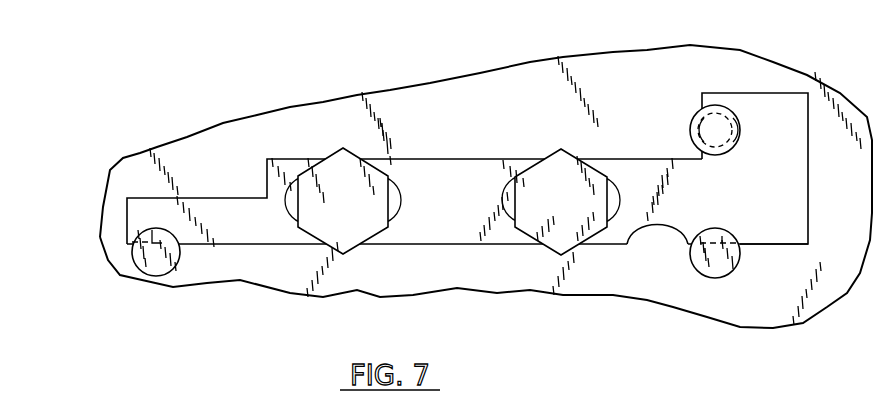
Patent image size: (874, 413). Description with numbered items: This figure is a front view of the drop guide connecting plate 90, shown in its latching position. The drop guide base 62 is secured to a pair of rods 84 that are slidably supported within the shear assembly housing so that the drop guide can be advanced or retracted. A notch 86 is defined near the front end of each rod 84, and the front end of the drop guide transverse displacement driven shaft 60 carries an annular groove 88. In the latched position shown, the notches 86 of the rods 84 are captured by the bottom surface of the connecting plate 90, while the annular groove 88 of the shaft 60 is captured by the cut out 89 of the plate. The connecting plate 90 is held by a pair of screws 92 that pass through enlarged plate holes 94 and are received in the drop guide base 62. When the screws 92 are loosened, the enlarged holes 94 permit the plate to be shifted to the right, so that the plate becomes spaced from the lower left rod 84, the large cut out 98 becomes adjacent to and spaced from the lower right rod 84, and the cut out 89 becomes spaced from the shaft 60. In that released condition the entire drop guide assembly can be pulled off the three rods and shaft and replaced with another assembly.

The drop guide transverse displacement driven shaft 60 is at (740, 118).
The drop guide base 62 is at (636, 97).
The rods 84 is at (170, 273).
The notch 86 is at (132, 242).
The annular groove 88 is at (690, 130).
The cut out 89 is at (728, 149).
The connecting plate 90 is at (778, 200).
The screws 92 is at (357, 216).
The enlarged plate holes 94 is at (402, 200).
The large cut out 98 is at (644, 227).